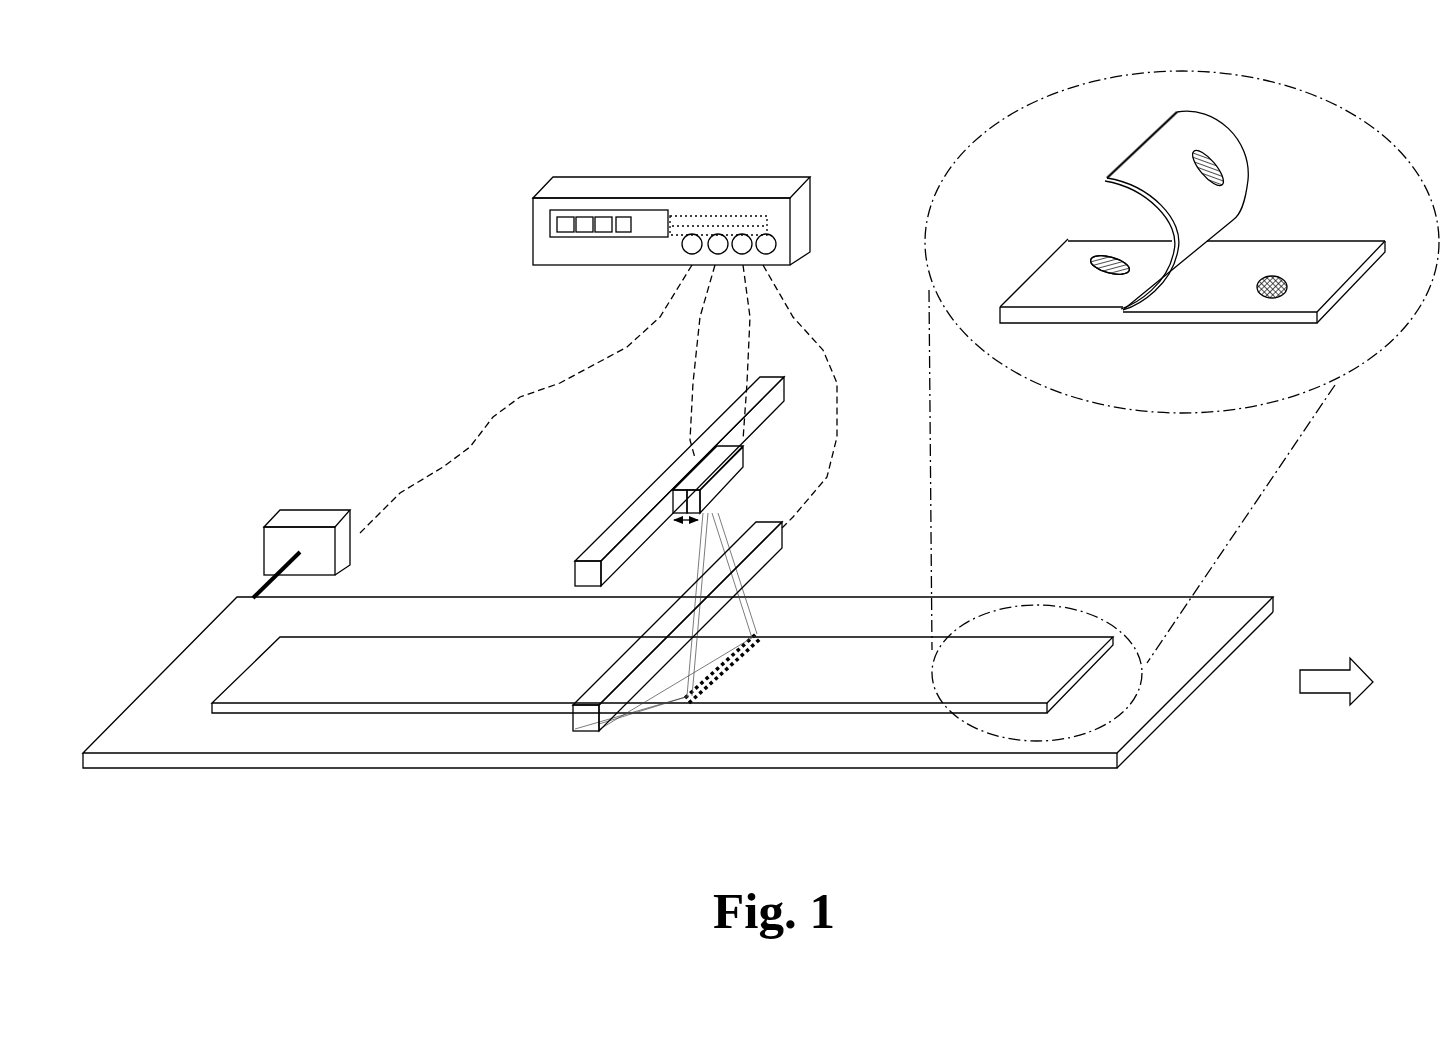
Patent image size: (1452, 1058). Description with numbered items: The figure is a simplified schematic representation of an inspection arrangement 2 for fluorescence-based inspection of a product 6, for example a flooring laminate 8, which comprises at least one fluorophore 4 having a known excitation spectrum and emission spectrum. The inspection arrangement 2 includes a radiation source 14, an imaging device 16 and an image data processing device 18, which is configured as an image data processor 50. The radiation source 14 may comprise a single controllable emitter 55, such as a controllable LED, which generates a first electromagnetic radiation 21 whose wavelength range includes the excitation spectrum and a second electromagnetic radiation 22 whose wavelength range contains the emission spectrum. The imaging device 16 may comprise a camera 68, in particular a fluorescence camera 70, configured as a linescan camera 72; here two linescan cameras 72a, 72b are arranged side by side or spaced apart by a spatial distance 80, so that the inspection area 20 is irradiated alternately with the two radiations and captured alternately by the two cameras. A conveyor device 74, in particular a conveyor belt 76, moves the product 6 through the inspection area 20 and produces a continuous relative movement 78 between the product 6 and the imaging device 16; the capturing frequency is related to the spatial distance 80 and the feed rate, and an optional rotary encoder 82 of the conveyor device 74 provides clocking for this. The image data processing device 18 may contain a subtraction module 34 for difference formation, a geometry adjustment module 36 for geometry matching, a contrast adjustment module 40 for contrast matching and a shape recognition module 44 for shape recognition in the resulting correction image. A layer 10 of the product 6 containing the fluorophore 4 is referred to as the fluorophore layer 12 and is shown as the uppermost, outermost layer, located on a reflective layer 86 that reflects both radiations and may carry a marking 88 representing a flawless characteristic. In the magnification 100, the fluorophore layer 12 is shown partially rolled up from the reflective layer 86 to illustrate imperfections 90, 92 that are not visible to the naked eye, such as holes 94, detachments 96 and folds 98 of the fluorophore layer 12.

The inspection arrangement 2 is at (760, 447).
The fluorophore 4 is at (730, 464).
The product 6 is at (730, 407).
The flooring laminate 8 is at (410, 620).
The layer 10 is at (1155, 282).
The fluorophore layer 12 is at (1155, 282).
The radiation source 14 is at (659, 672).
The imaging device 16 is at (571, 573).
The image data processing device 18 is at (671, 215).
The image data processor 50 is at (671, 215).
The inspection area 20 is at (717, 621).
The first electromagnetic radiation 21 is at (764, 576).
The second electromagnetic radiation 22 is at (769, 591).
The subtraction module 34 is at (582, 217).
The geometry adjustment module 36 is at (622, 217).
The contrast adjustment module 40 is at (604, 232).
The shape recognition module 44 is at (567, 232).
The controllable emitter 55 is at (592, 733).
The camera 68 is at (698, 479).
The fluorescence camera 70 is at (698, 479).
The linescan camera 72 is at (698, 479).
The first linescan camera 72a is at (674, 500).
The second linescan camera 72b is at (741, 492).
The conveyor device 74 is at (677, 712).
The conveyor belt 76 is at (145, 760).
The relative movement 78 is at (1328, 683).
The spatial distance 80 is at (683, 530).
The rotary encoder 82 is at (290, 520).
The reflective layer 86 is at (1000, 313).
The marking 88 is at (1272, 298).
The imperfection 90 is at (1213, 206).
The imperfection 92 is at (1045, 280).
The hole 94 is at (1227, 170).
The detachment 96 is at (1110, 257).
The fold 98 is at (1070, 257).
The magnification 100 is at (990, 128).